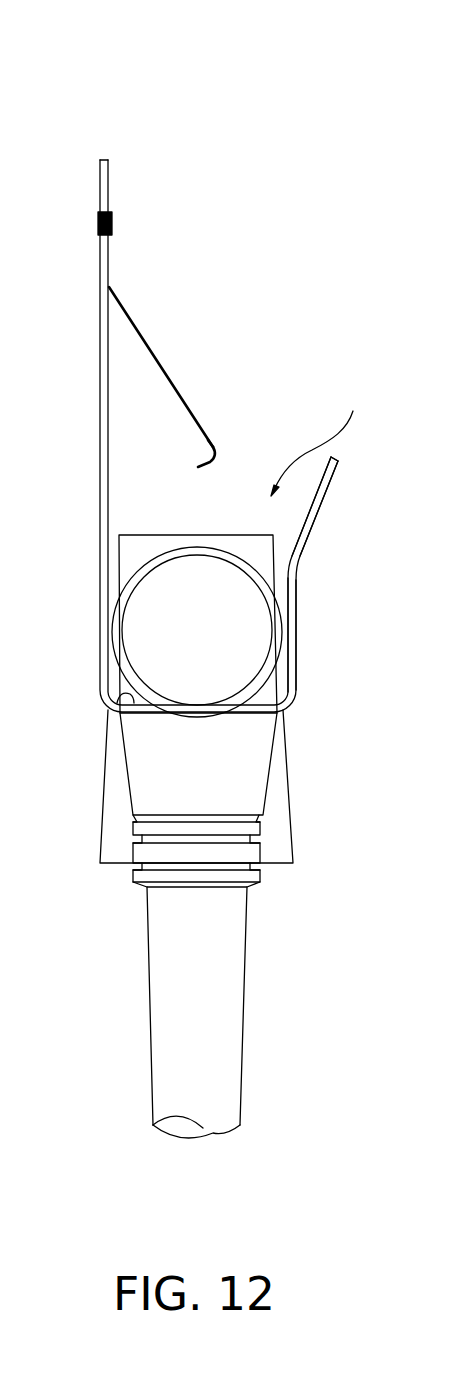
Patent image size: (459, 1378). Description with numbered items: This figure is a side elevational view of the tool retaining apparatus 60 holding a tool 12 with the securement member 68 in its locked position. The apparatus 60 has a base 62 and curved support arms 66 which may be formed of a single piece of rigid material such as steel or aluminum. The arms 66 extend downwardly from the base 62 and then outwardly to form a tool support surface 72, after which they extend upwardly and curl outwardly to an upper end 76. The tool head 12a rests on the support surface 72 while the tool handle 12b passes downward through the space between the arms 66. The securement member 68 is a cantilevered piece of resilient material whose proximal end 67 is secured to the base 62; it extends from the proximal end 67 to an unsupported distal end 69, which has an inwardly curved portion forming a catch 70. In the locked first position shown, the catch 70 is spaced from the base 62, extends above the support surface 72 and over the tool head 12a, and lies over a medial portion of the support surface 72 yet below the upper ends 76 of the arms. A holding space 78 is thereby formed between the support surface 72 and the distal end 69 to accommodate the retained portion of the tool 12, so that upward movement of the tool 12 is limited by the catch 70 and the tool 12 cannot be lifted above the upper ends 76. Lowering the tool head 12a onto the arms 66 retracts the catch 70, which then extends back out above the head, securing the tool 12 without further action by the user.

The tool retaining apparatus 60 is at (222, 109).
The base 62 is at (100, 403).
The curved support arms 66 is at (297, 632).
The proximal end 67 is at (108, 265).
The securement member 68 is at (158, 362).
The distal end 69 is at (199, 465).
The catch 70 is at (213, 449).
The tool support surface 72 is at (110, 703).
The upper end 76 is at (334, 472).
The holding space 78 is at (319, 439).
The tool 12 is at (233, 1003).
The tool head 12a is at (128, 536).
The tool handle 12b is at (163, 965).